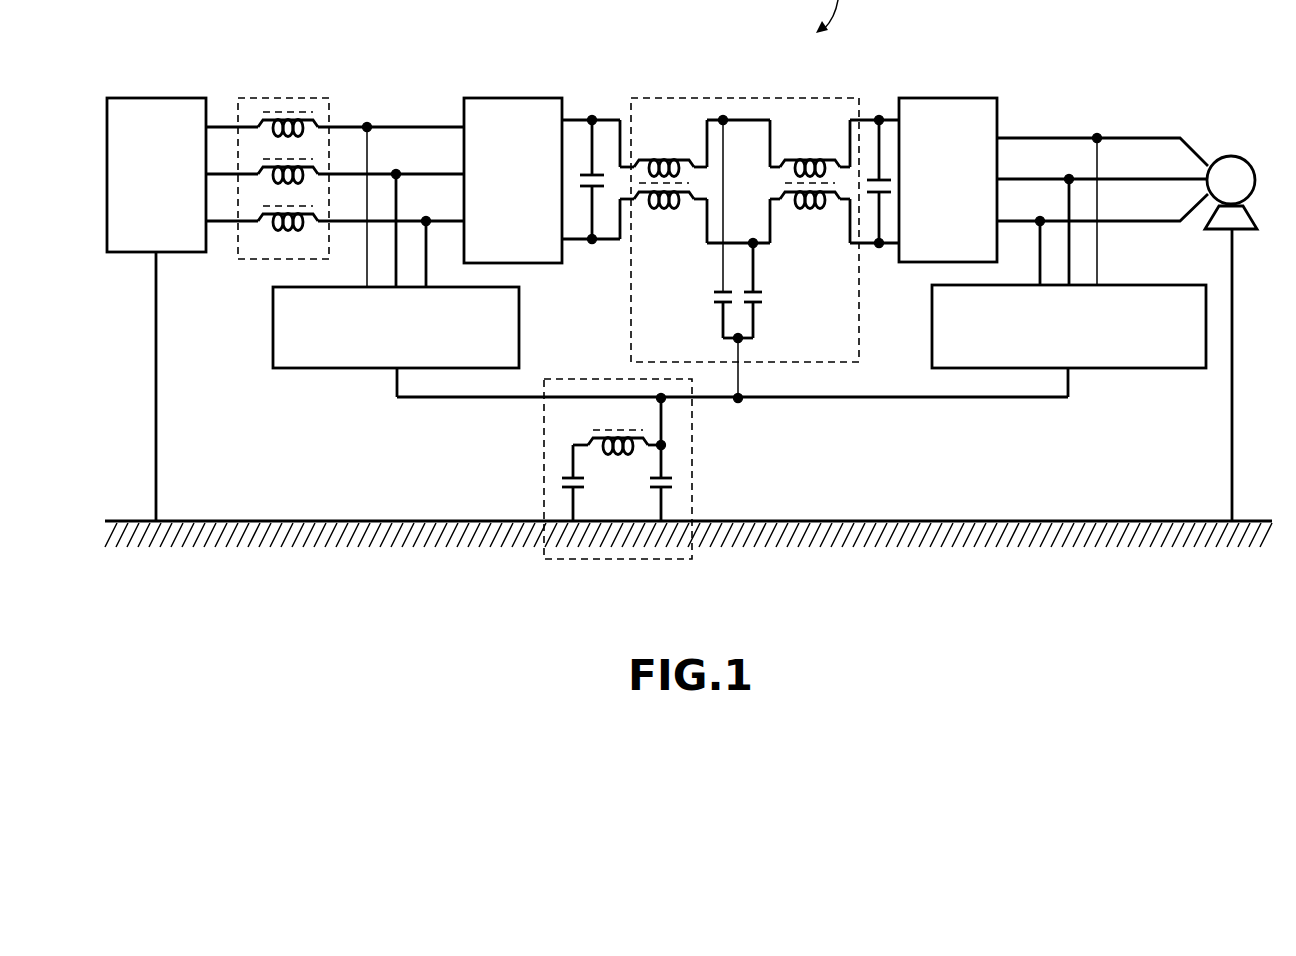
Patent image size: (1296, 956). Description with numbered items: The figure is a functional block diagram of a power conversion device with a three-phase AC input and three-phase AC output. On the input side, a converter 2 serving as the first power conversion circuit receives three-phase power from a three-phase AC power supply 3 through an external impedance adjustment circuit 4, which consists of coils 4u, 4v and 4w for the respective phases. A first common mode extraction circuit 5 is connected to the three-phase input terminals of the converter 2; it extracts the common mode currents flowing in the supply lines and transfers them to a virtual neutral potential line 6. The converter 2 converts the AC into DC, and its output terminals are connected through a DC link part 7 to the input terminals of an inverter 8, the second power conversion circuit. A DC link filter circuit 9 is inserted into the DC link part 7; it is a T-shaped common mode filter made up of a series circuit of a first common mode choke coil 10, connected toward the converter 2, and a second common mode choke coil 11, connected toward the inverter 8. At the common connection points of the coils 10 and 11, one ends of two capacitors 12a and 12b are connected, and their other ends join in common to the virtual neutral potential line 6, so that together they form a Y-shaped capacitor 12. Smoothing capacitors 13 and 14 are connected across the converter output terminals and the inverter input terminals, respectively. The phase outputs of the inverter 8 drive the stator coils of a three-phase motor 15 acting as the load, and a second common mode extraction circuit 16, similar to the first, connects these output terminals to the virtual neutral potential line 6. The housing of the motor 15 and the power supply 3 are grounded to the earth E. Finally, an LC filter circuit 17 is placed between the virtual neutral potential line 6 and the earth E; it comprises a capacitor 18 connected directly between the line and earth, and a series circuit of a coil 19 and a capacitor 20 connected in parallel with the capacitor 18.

The converter 2 is at (507, 97).
The three-phase AC power supply 3 is at (156, 97).
The external impedance adjustment circuit 4 is at (293, 182).
The coil 4u is at (316, 121).
The coil 4v is at (267, 185).
The coil 4w is at (282, 233).
The first common mode extraction circuit 5 is at (330, 372).
The virtual neutral potential line 6 is at (463, 400).
The DC link part 7 is at (748, 97).
The inverter 8 is at (945, 97).
The DC link filter circuit 9 is at (692, 97).
The common mode choke coil 10 is at (667, 210).
The common mode choke coil 11 is at (815, 210).
The Y-shaped capacitor 12 is at (742, 259).
The capacitor 12a is at (713, 300).
The capacitor 12b is at (767, 300).
The smoothing capacitor 13 is at (570, 180).
The smoothing capacitor 14 is at (890, 173).
The three-phase motor 15 is at (1228, 148).
The second common mode extraction circuit 16 is at (1155, 372).
The LC filter circuit 17 is at (625, 469).
The capacitor 18 is at (676, 478).
The coil 19 is at (612, 455).
The capacitor 20 is at (560, 478).
The earth E is at (885, 520).